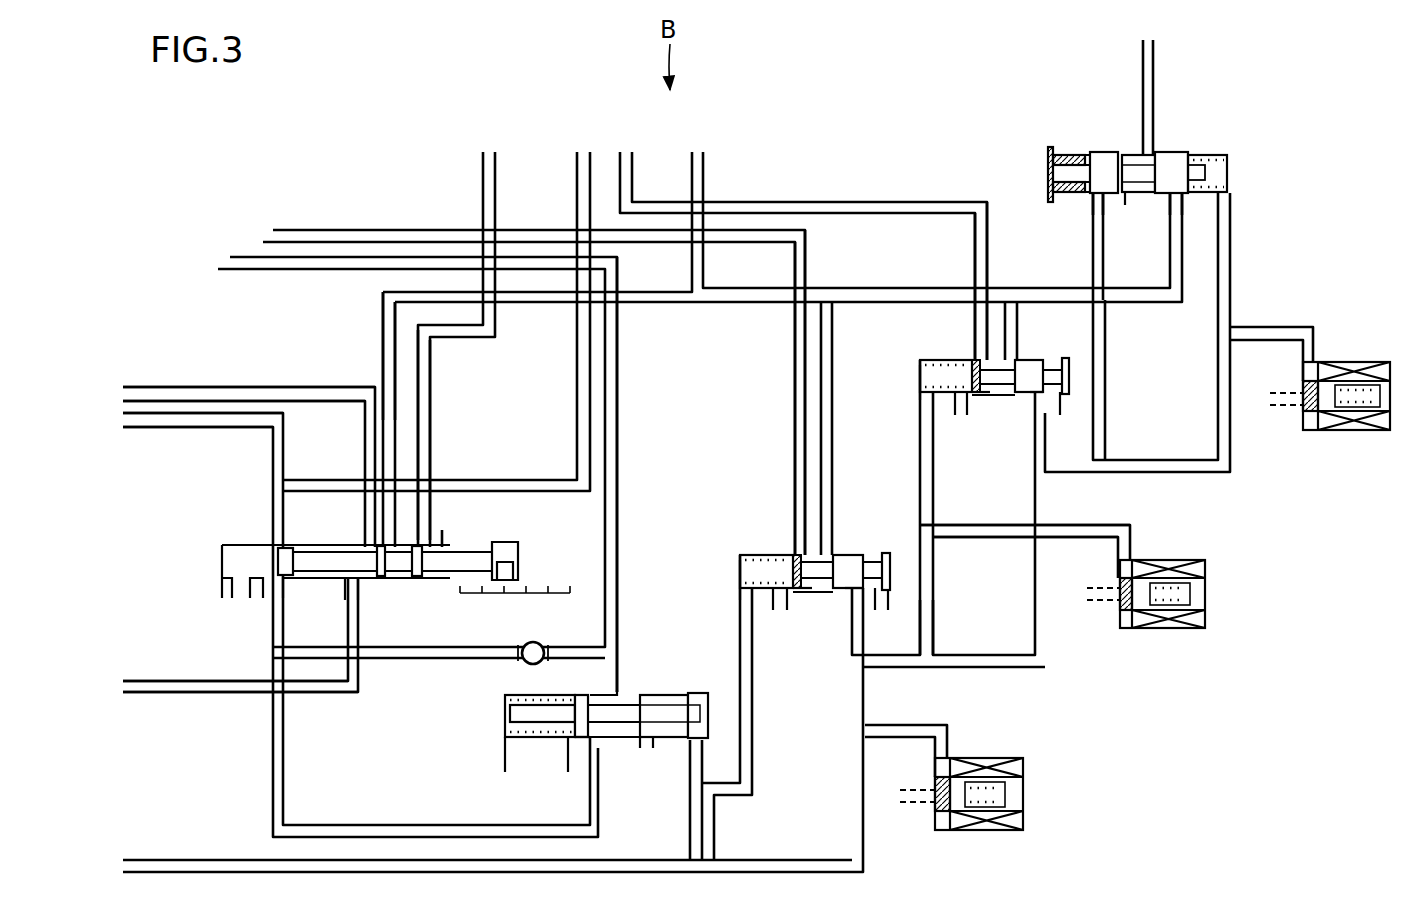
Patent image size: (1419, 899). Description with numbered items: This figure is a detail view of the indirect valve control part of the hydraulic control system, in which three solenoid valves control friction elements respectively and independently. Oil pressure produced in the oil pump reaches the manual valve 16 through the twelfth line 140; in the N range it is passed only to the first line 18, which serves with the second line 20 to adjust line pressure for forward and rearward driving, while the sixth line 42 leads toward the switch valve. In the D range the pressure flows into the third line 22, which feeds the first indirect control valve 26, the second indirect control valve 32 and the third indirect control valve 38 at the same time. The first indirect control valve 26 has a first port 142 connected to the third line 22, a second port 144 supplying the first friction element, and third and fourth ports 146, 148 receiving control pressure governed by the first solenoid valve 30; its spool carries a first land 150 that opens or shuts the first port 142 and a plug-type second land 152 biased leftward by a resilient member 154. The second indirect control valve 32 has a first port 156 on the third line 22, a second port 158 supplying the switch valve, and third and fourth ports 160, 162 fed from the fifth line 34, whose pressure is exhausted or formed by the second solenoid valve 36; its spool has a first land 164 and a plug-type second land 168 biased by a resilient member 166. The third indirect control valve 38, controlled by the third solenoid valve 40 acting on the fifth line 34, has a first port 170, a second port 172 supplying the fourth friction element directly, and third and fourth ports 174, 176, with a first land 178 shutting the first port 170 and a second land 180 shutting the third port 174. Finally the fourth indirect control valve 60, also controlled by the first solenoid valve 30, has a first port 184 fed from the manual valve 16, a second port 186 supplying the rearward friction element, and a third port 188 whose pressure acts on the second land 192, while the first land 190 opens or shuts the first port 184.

The manual valve 16 is at (220, 560).
The first line 18 is at (190, 385).
The second line 20 is at (190, 433).
The third line 22 is at (383, 330).
The first indirect control valve 26 is at (792, 451).
The first solenoid valve 30 is at (1040, 794).
The second indirect control valve 32 is at (965, 335).
The fifth line 34 is at (985, 668).
The second solenoid valve 36 is at (1222, 594).
The third indirect control valve 38 is at (1149, 169).
The third solenoid valve 40 is at (1353, 353).
The sixth line 42 is at (432, 418).
The fourth indirect control valve 60 is at (585, 540).
The twelfth line 140 is at (178, 686).
The first port 142 is at (836, 557).
The second port 144 is at (800, 560).
The third port 146 is at (744, 592).
The fourth port 148 is at (853, 602).
The first land 150 is at (856, 566).
The second land 152 is at (797, 600).
The resilient member 154 is at (755, 567).
The first port 156 is at (1016, 356).
The second port 158 is at (979, 356).
The third port 160 is at (919, 406).
The fourth port 162 is at (1035, 400).
The first land 164 is at (1036, 368).
The resilient member 166 is at (936, 366).
The second land 168 is at (977, 398).
The first port 170 is at (1170, 200).
The second port 172 is at (1148, 153).
The third port 174 is at (1097, 203).
The fourth port 176 is at (1226, 207).
The first land 178 is at (1182, 165).
The second land 180 is at (1110, 162).
The first port 184 is at (595, 740).
The second port 186 is at (624, 688).
The third port 188 is at (700, 742).
The first land 190 is at (583, 702).
The second land 192 is at (672, 700).